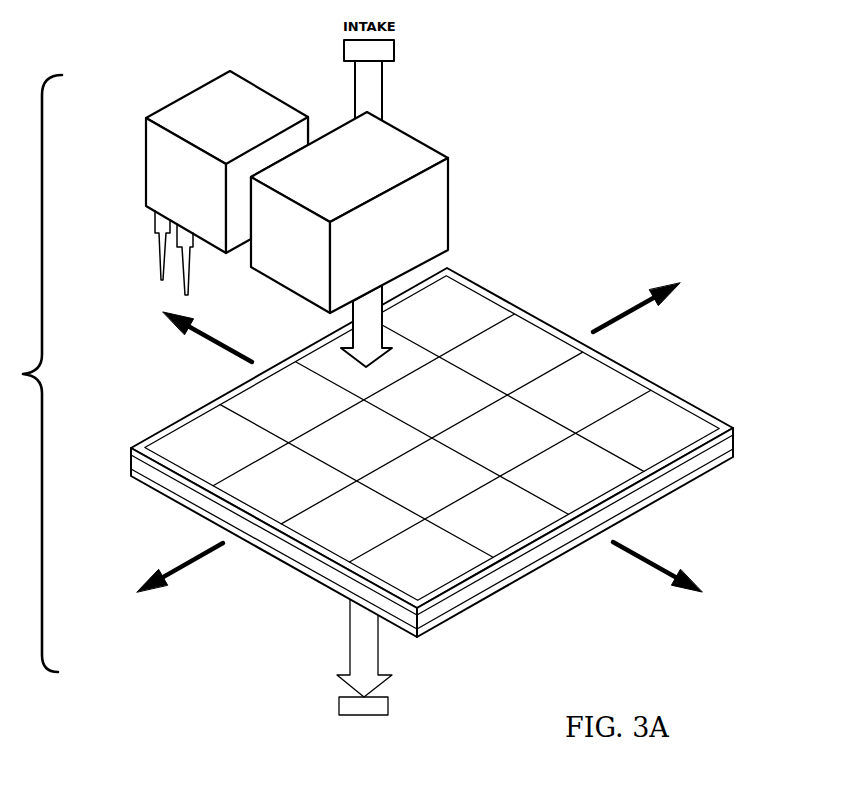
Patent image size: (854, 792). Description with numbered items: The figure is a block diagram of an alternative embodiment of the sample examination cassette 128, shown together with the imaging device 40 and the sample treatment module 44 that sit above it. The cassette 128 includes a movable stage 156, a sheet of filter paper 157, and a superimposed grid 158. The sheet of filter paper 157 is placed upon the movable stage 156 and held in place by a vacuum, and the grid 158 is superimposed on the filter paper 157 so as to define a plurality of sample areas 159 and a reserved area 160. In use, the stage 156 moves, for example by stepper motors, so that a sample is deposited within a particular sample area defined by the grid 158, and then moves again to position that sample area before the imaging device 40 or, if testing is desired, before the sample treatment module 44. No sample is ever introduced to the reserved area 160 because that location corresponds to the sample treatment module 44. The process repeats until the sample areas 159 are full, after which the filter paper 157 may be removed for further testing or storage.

The sample examination cassette 128 is at (741, 84).
The sample treatment module 44 is at (205, 92).
The imaging device 40 is at (417, 150).
The movable stage 156 is at (421, 491).
The sheet of filter paper 157 is at (510, 522).
The superimposed grid 158 is at (637, 403).
The sample areas 159 is at (523, 347).
The reserved area 160 is at (170, 443).